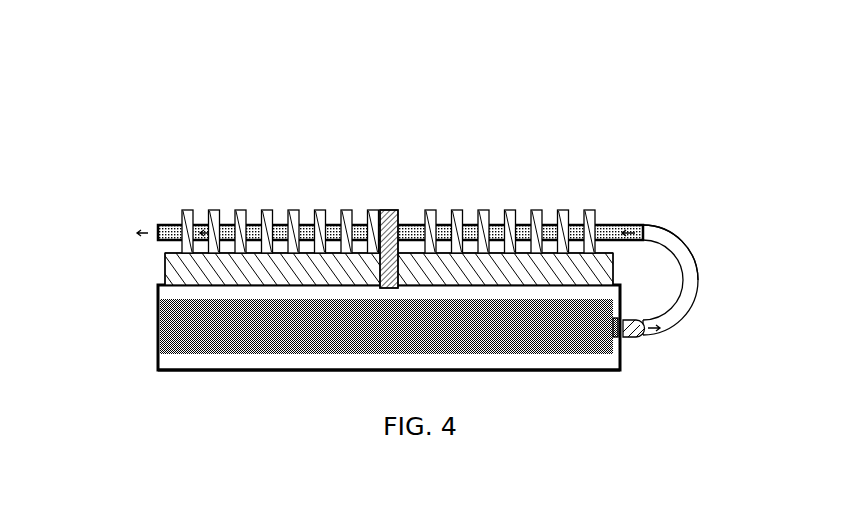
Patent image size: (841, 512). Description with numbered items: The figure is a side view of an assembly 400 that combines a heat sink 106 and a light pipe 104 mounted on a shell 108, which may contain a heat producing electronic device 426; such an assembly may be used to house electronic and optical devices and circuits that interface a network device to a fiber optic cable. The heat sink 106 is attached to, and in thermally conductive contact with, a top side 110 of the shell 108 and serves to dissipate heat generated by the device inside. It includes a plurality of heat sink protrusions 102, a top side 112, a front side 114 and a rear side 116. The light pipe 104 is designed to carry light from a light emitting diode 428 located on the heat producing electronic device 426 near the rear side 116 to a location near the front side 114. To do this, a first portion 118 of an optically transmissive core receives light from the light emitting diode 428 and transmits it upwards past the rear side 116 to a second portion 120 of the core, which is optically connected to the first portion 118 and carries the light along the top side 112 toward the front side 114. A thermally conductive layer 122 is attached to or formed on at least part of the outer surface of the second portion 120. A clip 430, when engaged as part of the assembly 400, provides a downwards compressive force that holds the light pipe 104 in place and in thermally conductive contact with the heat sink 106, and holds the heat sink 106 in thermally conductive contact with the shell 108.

The assembly 400 is at (131, 151).
The heat sink protrusions 102 is at (430, 208).
The light pipe 104 is at (163, 226).
The heat sink 106 is at (440, 278).
The shell 108 is at (513, 371).
The top side of shell 110 is at (157, 290).
The top side of heat sink 112 is at (168, 254).
The front side of heat sink 114 is at (165, 270).
The rear side of heat sink 116 is at (615, 262).
The first portion of optically transmissive core 118 is at (700, 278).
The second portion of optically transmissive core 120 is at (641, 227).
The thermally conductive layer 122 is at (606, 226).
The heat producing electronic device 426 is at (401, 334).
The light emitting diode 428 is at (636, 338).
The clip 430 is at (389, 211).